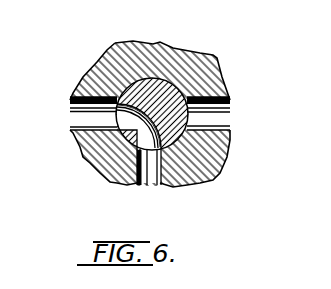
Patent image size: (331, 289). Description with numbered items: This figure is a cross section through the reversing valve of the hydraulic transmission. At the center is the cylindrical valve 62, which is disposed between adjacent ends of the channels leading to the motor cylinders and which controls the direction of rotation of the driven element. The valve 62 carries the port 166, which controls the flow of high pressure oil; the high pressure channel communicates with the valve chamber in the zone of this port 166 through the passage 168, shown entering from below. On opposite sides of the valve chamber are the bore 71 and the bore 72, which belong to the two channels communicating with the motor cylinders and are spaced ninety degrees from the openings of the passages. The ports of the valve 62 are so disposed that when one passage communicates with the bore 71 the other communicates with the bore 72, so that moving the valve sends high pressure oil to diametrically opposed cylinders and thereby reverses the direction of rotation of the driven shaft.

The cylindrical valve 62 is at (150, 85).
The bore 71 is at (72, 108).
The bore 72 is at (232, 105).
The high pressure port 166 is at (138, 128).
The passage 168 is at (153, 168).